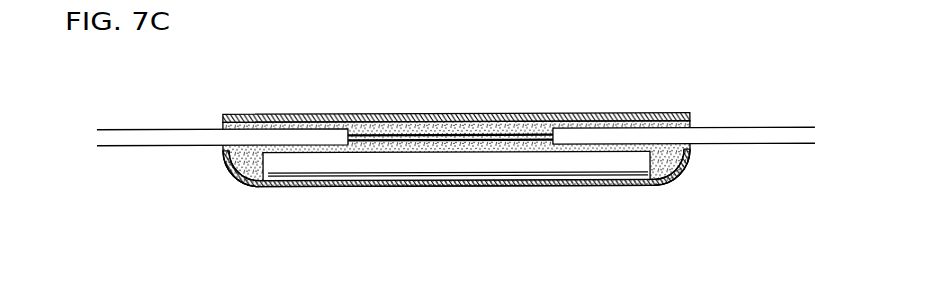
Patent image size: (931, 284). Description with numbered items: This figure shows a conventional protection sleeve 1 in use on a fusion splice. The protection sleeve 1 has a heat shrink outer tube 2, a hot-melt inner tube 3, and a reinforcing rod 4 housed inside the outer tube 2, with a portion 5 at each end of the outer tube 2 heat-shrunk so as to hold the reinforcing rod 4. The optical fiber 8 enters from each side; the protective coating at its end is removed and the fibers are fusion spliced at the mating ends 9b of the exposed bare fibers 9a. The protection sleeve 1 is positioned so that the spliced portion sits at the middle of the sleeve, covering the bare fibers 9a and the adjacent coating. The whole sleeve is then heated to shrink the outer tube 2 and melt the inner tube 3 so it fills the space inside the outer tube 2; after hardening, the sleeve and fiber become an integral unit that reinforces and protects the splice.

The protection sleeve 1 is at (349, 108).
The heat shrink outer tube 2 is at (623, 114).
The hot-melt inner tube 3 is at (540, 114).
The reinforcing rod 4 is at (622, 166).
The heat-shrunk end portion 5 is at (660, 171).
The optical fiber 8 is at (730, 127).
The bare fiber 9a is at (498, 141).
The mating end 9b is at (452, 136).